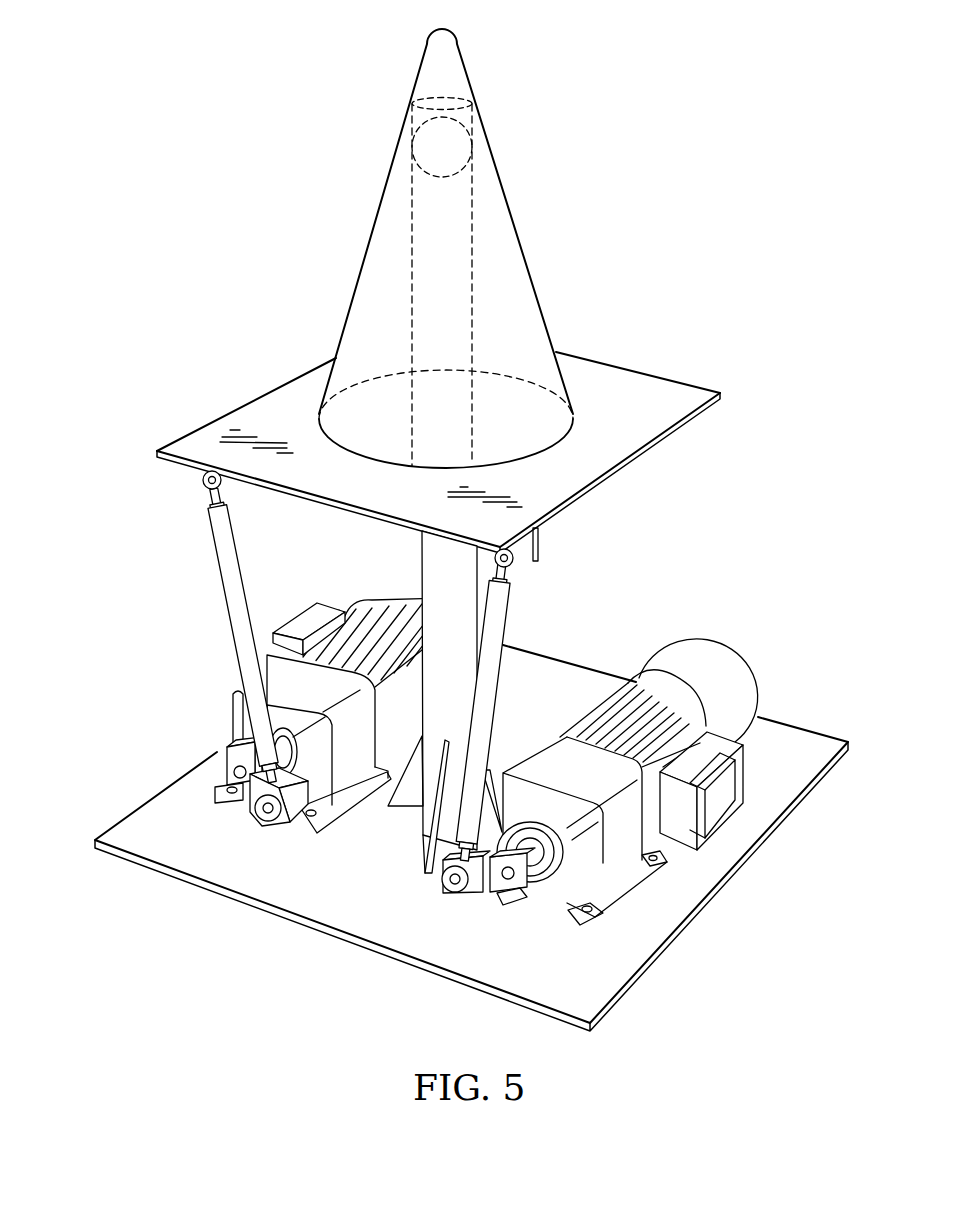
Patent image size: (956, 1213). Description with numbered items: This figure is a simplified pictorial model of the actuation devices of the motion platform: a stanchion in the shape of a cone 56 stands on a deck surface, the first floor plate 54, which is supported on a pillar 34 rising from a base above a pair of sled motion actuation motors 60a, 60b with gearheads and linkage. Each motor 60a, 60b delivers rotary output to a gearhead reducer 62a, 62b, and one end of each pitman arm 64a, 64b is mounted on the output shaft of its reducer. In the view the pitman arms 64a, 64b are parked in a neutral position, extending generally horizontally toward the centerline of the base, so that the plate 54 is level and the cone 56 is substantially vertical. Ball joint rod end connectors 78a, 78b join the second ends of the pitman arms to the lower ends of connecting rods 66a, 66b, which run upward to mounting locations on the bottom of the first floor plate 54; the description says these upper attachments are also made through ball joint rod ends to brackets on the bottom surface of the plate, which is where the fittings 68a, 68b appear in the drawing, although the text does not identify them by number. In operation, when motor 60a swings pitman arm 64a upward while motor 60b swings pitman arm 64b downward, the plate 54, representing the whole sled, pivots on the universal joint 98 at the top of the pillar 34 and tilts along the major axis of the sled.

The pillar 34 is at (418, 541).
The first floor plate 54 is at (624, 378).
The cone 56 is at (498, 189).
The universal joint 98 is at (433, 146).
The motor 60a is at (373, 615).
The motor 60b is at (686, 655).
The gearhead reducer 62a is at (232, 690).
The gearhead reducer 62b is at (560, 762).
The pitman arm 64a is at (225, 772).
The pitman arm 64b is at (510, 895).
The connecting rod 66a is at (223, 593).
The connecting rod 66b is at (508, 612).
The ball joint 68a is at (205, 480).
The ball joint 68b is at (512, 560).
The ball joint rod end connector 78a is at (263, 822).
The ball joint rod end connector 78b is at (448, 890).